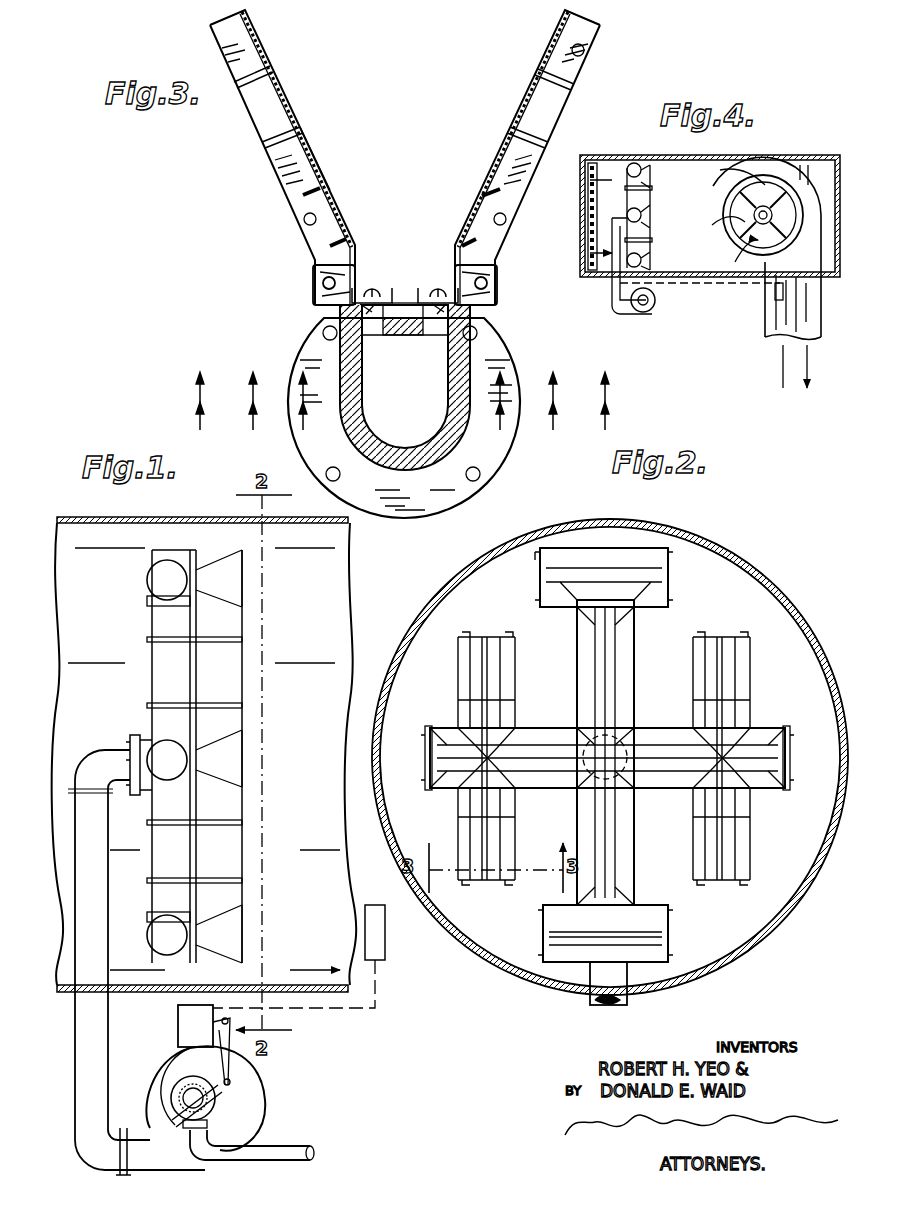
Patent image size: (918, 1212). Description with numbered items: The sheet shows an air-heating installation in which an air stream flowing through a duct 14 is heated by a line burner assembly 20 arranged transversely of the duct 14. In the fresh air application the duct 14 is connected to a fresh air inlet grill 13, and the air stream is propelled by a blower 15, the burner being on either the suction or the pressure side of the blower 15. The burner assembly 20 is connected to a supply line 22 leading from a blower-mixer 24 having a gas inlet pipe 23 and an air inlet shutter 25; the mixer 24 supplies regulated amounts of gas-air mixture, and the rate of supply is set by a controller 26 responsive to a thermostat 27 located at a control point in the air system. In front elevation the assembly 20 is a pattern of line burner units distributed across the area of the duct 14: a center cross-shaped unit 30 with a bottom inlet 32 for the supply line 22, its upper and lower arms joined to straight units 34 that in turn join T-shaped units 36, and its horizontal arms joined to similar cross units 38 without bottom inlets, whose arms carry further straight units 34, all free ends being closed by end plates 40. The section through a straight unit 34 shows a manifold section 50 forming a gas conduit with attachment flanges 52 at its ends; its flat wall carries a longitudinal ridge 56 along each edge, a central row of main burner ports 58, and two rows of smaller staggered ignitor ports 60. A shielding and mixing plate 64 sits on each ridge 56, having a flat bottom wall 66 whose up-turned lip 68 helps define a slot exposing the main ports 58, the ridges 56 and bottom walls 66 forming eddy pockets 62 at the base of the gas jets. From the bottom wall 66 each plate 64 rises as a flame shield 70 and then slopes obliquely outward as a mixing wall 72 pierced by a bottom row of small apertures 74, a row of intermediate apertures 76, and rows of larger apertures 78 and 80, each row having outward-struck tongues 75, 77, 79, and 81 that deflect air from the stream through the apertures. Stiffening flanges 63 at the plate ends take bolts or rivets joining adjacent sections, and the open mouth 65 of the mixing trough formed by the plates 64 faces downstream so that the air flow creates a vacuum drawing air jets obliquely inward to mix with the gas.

In FIG. 4, the fresh air inlet grill 13 is at (588, 224).
In FIG. 4, the duct 14 is at (686, 157).
In FIG. 1, the duct 14 is at (148, 516).
In FIG. 2, the duct 14 is at (727, 556).
In FIG. 4, the blower 15 is at (793, 168).
In FIG. 4, the line burner assembly 20 is at (651, 216).
In FIG. 1, the line burner assembly 20 is at (250, 652).
In FIG. 2, the line burner assembly 20 is at (607, 777).
In FIG. 4, the supply line 22 is at (612, 290).
In FIG. 1, the supply line 22 is at (105, 750).
In FIG. 2, the supply line 22 is at (628, 990).
In FIG. 1, the gas inlet pipe 23 is at (268, 1140).
In FIG. 4, the blower-mixer 24 is at (660, 303).
In FIG. 1, the blower-mixer 24 is at (266, 1090).
In FIG. 1, the air inlet shutter 25 is at (160, 1075).
In FIG. 1, the controller 26 is at (177, 1020).
In FIG. 4, the thermostat 27 is at (775, 296).
In FIG. 1, the thermostat 27 is at (385, 958).
In FIG. 2, the cross-shaped unit 30 is at (628, 700).
In FIG. 1, the bottom inlet 32 is at (148, 790).
In FIG. 2, the bottom inlet 32 is at (585, 722).
In FIG. 2, the straight units 34 is at (515, 660).
In FIG. 2, the T-shaped units 36 is at (636, 614).
In FIG. 2, the cross units 38 is at (540, 787).
In FIG. 2, the end plates 40 is at (538, 580).
In FIG. 3, the manifold section 50 is at (340, 365).
In FIG. 3, the attachment flanges 52 is at (505, 372).
In FIG. 3, the longitudinal ridge 56 is at (450, 305).
In FIG. 3, the main burner ports 58 is at (405, 338).
In FIG. 3, the ignitor ports 60 is at (384, 342).
In FIG. 3, the eddy pockets 62 is at (358, 302).
In FIG. 3, the stiffening flanges 63 is at (225, 27).
In FIG. 3, the shielding and mixing plate 64 is at (255, 35).
In FIG. 3, the open mouth 65 is at (405, 160).
In FIG. 3, the flat bottom wall 66 is at (323, 285).
In FIG. 3, the up-turned lip 68 is at (384, 288).
In FIG. 3, the flame shield 70 is at (313, 268).
In FIG. 3, the mixing wall 72 is at (262, 135).
In FIG. 3, the small apertures 74 is at (350, 242).
In FIG. 3, the small tongues 75 is at (320, 240).
In FIG. 3, the intermediate sized apertures 76 is at (478, 197).
In FIG. 3, the tongues 77 is at (500, 198).
In FIG. 3, the larger apertures 78 is at (305, 128).
In FIG. 3, the tongues 79 is at (262, 145).
In FIG. 3, the larger apertures 80 is at (528, 78).
In FIG. 3, the tongues 81 is at (575, 82).